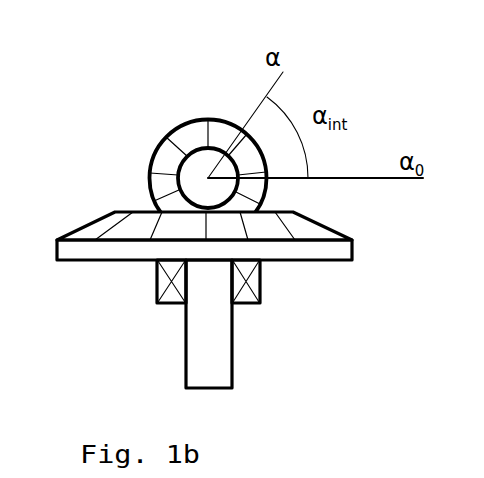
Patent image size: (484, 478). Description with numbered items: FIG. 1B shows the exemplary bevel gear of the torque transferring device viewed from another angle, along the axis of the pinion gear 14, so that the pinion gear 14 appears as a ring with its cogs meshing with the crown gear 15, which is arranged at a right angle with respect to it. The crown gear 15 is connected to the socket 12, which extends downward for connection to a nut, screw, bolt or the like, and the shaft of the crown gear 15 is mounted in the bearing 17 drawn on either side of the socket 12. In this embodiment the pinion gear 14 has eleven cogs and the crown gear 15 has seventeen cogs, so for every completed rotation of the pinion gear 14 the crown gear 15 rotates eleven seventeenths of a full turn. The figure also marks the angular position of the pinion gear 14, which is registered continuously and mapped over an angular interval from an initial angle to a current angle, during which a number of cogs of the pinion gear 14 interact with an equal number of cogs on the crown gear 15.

The socket 12 is at (233, 375).
The pinion gear 14 is at (176, 120).
The crown gear 15 is at (95, 219).
The bearing 17 is at (157, 304).